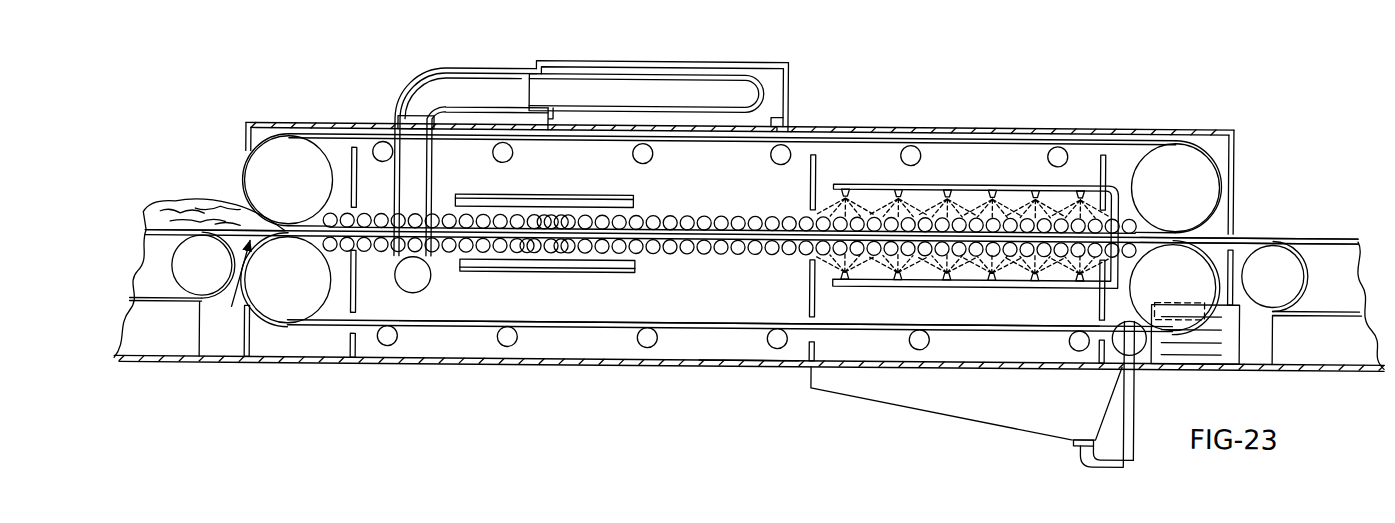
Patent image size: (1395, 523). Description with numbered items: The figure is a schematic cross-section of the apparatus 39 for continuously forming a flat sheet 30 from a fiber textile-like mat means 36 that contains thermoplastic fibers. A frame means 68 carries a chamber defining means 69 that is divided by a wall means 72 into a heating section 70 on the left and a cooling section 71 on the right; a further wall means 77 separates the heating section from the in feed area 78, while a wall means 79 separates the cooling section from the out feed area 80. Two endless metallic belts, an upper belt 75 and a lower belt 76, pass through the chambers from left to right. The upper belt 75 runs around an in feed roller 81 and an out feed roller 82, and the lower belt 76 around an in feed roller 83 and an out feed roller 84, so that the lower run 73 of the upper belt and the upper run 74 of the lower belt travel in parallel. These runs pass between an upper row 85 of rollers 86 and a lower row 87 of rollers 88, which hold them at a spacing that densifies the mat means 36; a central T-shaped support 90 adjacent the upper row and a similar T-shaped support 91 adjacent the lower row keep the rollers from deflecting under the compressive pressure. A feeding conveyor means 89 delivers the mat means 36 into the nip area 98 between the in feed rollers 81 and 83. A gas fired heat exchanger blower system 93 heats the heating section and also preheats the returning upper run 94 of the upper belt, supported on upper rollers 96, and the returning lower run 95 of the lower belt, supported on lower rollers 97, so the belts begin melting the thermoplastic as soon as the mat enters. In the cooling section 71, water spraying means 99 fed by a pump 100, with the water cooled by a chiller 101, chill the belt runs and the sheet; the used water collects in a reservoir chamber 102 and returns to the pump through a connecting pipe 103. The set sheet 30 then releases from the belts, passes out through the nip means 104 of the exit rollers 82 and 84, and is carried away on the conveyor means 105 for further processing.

The sheet 30 is at (1295, 235).
The fiber textile-like mat means 36 is at (208, 202).
The method and apparatus 39 is at (818, 71).
The frame means 68 is at (662, 364).
The chamber defining means 69 is at (908, 128).
The heating section 70 is at (598, 184).
The cooling section 71 is at (997, 176).
The wall means 72 is at (818, 164).
The lower run 73 is at (782, 218).
The upper run 74 is at (767, 247).
The upper belt 75 is at (845, 137).
The lower belt 76 is at (698, 323).
The wall means 77 is at (353, 163).
The in feed area 78 is at (325, 146).
The wall means 79 is at (1108, 167).
The out feed area 80 is at (1212, 139).
The in feed roller 81 is at (278, 178).
The out feed roller 82 is at (1164, 183).
The in feed roller 83 is at (266, 308).
The out feed roller 84 is at (1159, 281).
The upper row 85 is at (562, 213).
The rollers 86 is at (538, 216).
The lower row 87 is at (559, 253).
The rollers 88 is at (533, 252).
The feeding conveyor means 89 is at (160, 264).
The T-shaped support 90 is at (643, 196).
The T-shaped support 91 is at (608, 264).
The gas fired heat exchanger blower system 93 is at (658, 78).
The upper run 94 is at (733, 137).
The lower run 95 is at (738, 336).
The upper rollers 96 is at (494, 160).
The lower rollers 97 is at (390, 346).
The nip area 98 is at (227, 288).
The water spraying means 99 is at (953, 185).
The pump 100 is at (1142, 363).
The chiller 101 is at (1208, 346).
The reservoir chamber 102 is at (1002, 413).
The connecting pipe 103 is at (1133, 440).
The nip means 104 is at (1215, 231).
The conveyor means 105 is at (1313, 270).